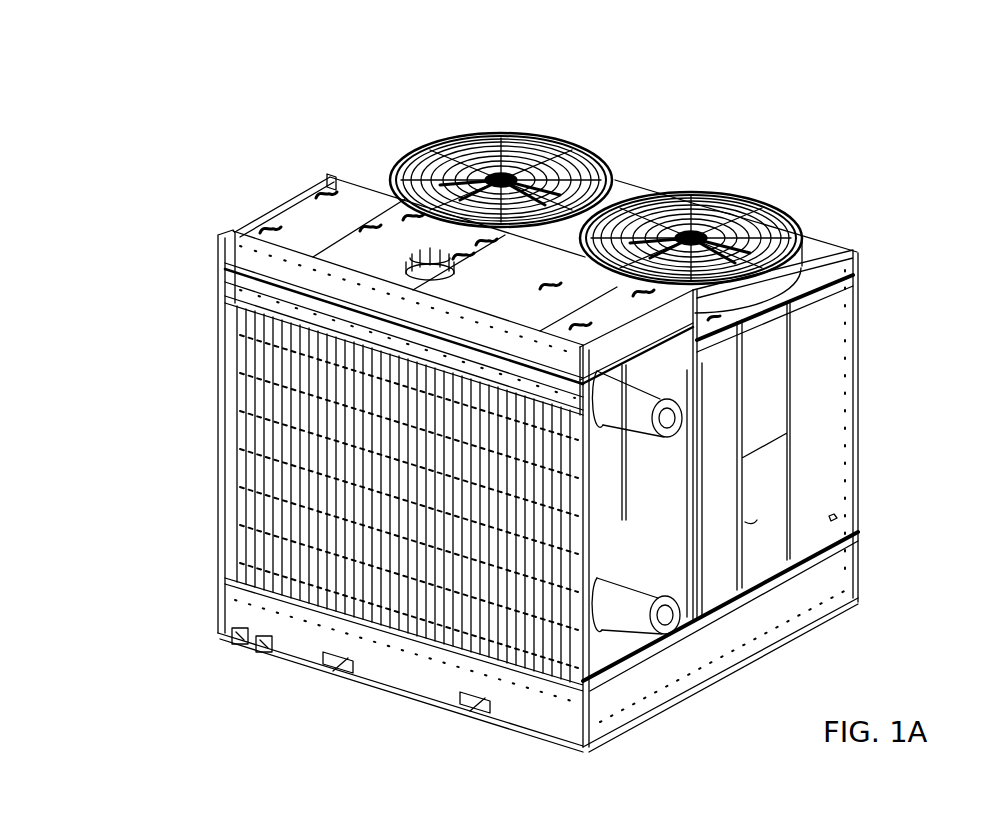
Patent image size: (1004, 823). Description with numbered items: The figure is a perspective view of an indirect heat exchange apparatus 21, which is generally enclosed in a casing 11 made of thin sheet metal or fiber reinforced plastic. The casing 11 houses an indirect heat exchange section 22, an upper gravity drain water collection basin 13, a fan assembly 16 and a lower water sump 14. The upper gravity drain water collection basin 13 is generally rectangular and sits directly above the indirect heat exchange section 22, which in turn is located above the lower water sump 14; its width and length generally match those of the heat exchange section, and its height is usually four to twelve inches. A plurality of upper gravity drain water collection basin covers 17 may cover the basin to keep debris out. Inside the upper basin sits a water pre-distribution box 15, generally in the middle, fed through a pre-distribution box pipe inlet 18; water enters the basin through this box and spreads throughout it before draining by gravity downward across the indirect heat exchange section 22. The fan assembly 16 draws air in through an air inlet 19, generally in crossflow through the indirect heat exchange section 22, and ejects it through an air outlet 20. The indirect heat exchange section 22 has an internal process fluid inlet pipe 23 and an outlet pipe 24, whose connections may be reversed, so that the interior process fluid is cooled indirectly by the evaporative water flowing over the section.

The casing 11 is at (862, 447).
The upper gravity drain water collection basin 13 is at (235, 229).
The lower water sump 14 is at (388, 683).
The water pre-distribution box 15 is at (335, 268).
The fan assembly 16 is at (455, 135).
The upper gravity drain water collection basin covers 17 is at (330, 178).
The pre-distribution box pipe inlet 18 is at (413, 250).
The air inlet 19 is at (397, 523).
The air outlet 20 is at (700, 192).
The indirect heat exchange apparatus 21 is at (880, 262).
The indirect heat exchange section 22 is at (270, 468).
The internal process fluid inlet pipe 23 is at (640, 432).
The outlet pipe 24 is at (640, 618).